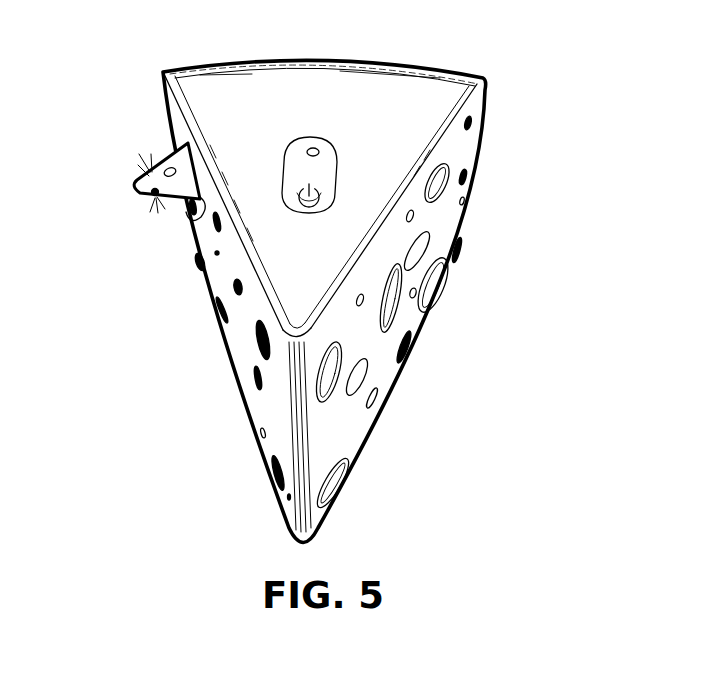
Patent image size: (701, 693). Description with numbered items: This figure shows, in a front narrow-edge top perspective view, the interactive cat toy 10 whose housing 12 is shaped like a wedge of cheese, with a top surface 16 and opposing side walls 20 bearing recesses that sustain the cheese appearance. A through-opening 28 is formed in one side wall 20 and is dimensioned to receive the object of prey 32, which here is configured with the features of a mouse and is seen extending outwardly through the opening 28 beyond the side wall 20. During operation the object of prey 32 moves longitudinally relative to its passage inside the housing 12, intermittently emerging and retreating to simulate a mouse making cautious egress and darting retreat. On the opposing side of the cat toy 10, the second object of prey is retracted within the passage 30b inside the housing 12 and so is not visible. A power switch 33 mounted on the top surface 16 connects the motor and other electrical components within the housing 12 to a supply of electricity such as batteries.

The interactive cat toy 10 is at (518, 56).
The housing 12 is at (380, 87).
The top surface 16 is at (233, 93).
The side wall 20 is at (450, 192).
The through-opening 28 is at (440, 280).
The passage 30b is at (446, 290).
The object of prey 32 is at (150, 177).
The power switch 33 is at (327, 170).